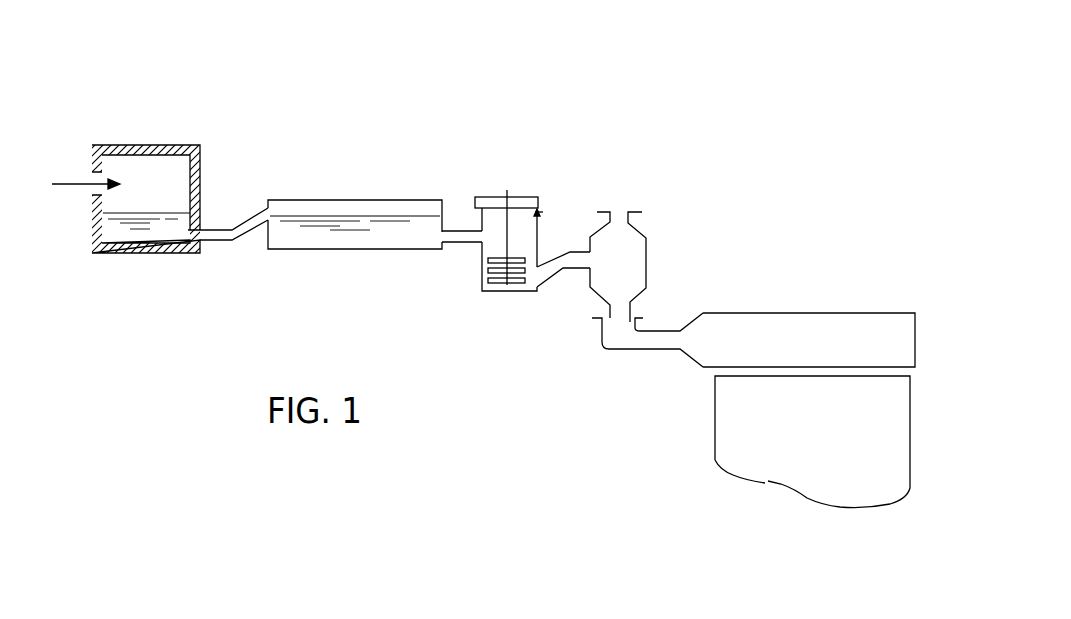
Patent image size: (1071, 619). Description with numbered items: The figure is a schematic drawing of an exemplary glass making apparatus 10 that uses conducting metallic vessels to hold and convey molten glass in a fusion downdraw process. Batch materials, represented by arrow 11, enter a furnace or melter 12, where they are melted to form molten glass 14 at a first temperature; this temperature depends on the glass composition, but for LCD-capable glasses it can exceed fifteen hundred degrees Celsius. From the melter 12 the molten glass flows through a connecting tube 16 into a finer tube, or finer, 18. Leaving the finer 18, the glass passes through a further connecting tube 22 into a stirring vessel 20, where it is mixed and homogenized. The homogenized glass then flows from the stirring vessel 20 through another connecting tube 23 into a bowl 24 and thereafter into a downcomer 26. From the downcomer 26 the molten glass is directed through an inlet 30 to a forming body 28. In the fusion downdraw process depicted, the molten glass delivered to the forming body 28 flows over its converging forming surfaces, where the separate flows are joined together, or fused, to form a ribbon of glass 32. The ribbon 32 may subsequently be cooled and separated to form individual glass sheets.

The apparatus 10 is at (571, 90).
The batch materials 11 is at (80, 182).
The melter 12 is at (142, 143).
The molten glass 14 is at (118, 232).
The connecting tube 16 is at (215, 242).
The finer tube 18 is at (338, 198).
The stirring vessel 20 is at (478, 257).
The connecting tube 22 is at (455, 228).
The connecting tube 23 is at (570, 250).
The bowl 24 is at (648, 243).
The downcomer 26 is at (597, 310).
The forming body 28 is at (873, 312).
The inlet 30 is at (637, 348).
The ribbon of glass 32 is at (702, 443).